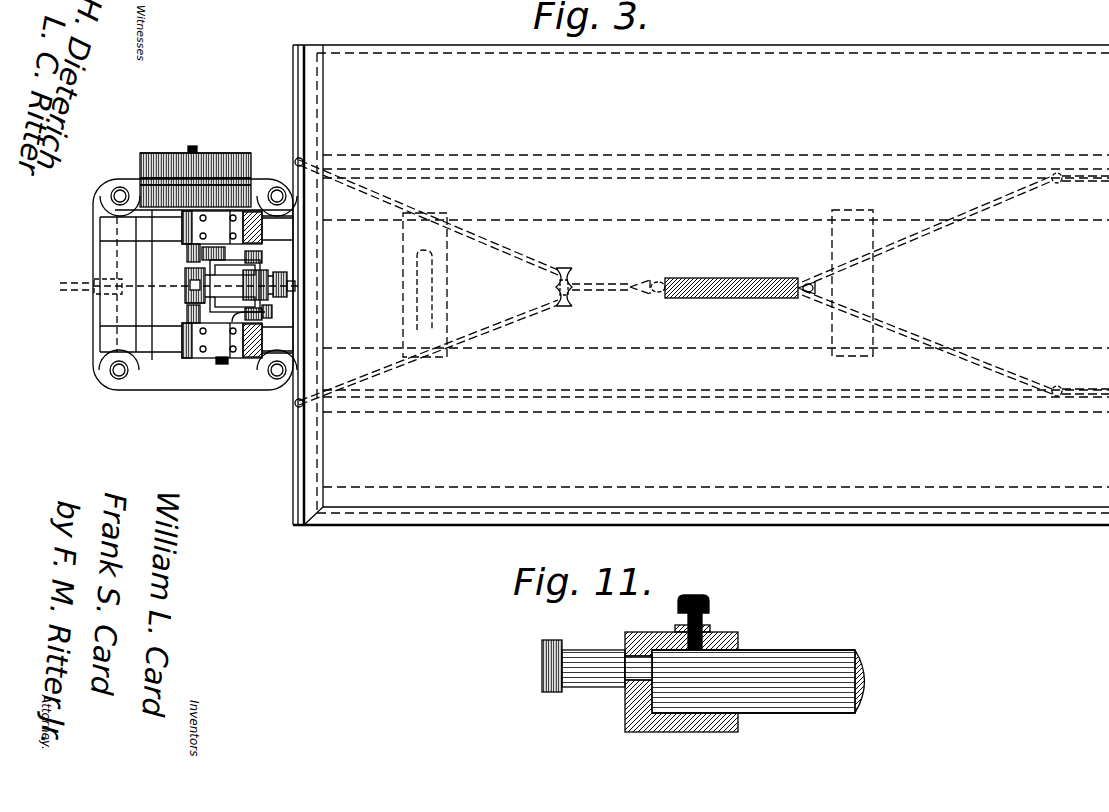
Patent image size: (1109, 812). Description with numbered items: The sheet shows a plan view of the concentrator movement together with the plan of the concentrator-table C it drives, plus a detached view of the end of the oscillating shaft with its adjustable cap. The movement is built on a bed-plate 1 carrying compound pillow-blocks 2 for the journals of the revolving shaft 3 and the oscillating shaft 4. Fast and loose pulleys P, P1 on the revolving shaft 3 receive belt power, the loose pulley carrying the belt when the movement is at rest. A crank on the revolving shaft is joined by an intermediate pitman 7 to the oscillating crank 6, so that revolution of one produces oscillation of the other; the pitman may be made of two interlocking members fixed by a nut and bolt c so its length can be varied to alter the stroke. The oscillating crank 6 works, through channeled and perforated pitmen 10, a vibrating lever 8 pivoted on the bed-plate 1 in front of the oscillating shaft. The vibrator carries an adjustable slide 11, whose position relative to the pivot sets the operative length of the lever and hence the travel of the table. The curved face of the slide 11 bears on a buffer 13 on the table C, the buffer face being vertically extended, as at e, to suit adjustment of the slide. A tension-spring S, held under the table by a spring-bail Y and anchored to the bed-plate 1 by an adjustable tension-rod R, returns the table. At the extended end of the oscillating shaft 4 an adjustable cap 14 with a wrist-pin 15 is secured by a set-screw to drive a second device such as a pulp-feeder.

In FIG. 3, the bed-plate 1 is at (97, 262).
In FIG. 3, the fast pulley P is at (138, 204).
In FIG. 3, the loose pulley P1 is at (162, 153).
In FIG. 3, the compound pillow-blocks 2 is at (262, 232).
In FIG. 3, the revolving shaft 3 is at (187, 252).
In FIG. 3, the oscillating shaft 4 is at (222, 363).
In FIG. 11, the oscillating shaft 4 is at (792, 657).
In FIG. 3, the oscillating crank 6 is at (186, 280).
In FIG. 3, the intermediate pitman 7 is at (190, 292).
In FIG. 3, the vibrating lever 8 is at (243, 277).
In FIG. 3, the pitmen 10 is at (260, 258).
In FIG. 3, the adjustable slide 11 is at (272, 270).
In FIG. 3, the buffer 13 is at (288, 295).
In FIG. 11, the adjustable cap 14 is at (690, 725).
In FIG. 11, the wrist-pin 15 is at (595, 676).
In FIG. 3, the vertically extended face e is at (277, 280).
In FIG. 3, the nut and bolt c is at (254, 315).
In FIG. 3, the adjustable tension-rod R is at (607, 283).
In FIG. 3, the tension-spring S is at (727, 277).
In FIG. 3, the spring-bail Y is at (877, 317).
In FIG. 3, the concentrator-table C is at (701, 285).